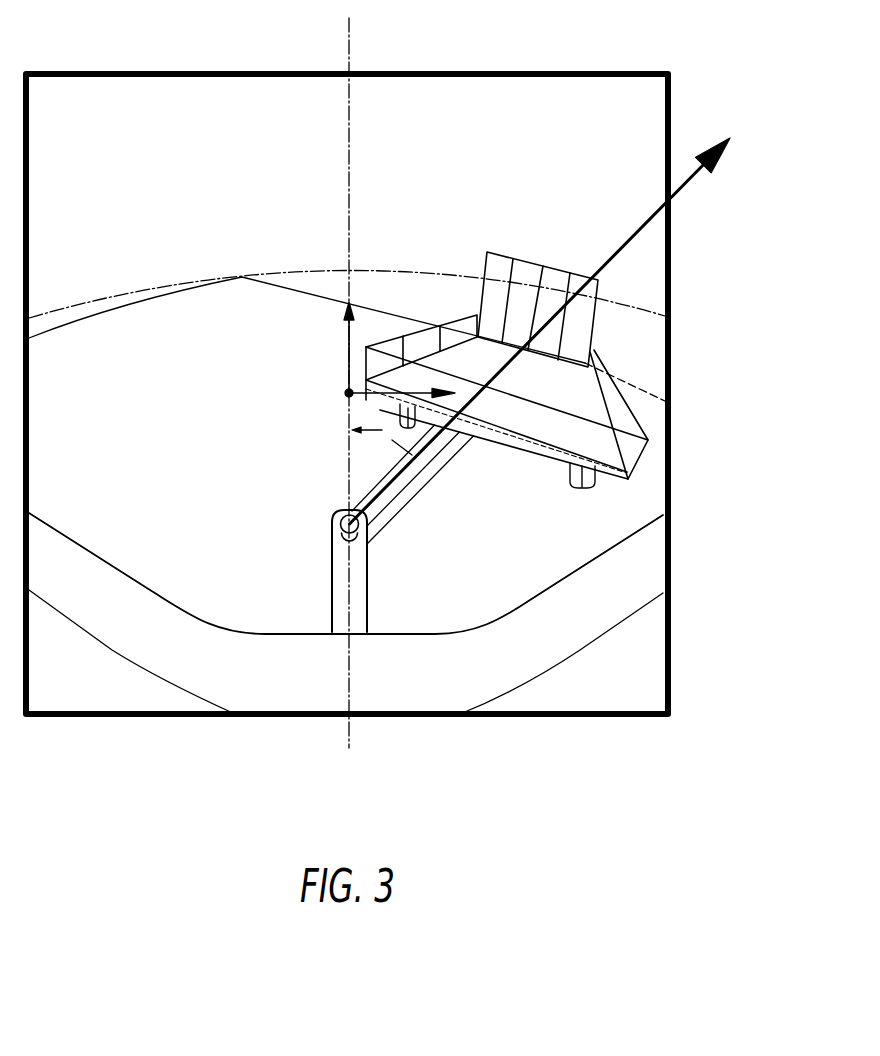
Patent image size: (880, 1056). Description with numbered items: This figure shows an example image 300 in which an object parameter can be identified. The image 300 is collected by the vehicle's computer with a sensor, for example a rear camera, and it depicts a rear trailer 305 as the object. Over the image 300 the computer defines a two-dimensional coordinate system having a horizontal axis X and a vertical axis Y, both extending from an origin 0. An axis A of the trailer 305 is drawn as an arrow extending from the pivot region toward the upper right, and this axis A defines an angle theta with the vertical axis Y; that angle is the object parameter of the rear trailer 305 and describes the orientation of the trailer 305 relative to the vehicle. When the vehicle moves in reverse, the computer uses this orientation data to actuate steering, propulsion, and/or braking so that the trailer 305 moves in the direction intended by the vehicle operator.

The image 300 is at (108, 71).
The rear trailer 305 is at (455, 324).
The axis of the trailer A is at (549, 320).
The origin 0 is at (339, 397).
The horizontal axis X is at (402, 385).
The vertical axis Y is at (339, 347).